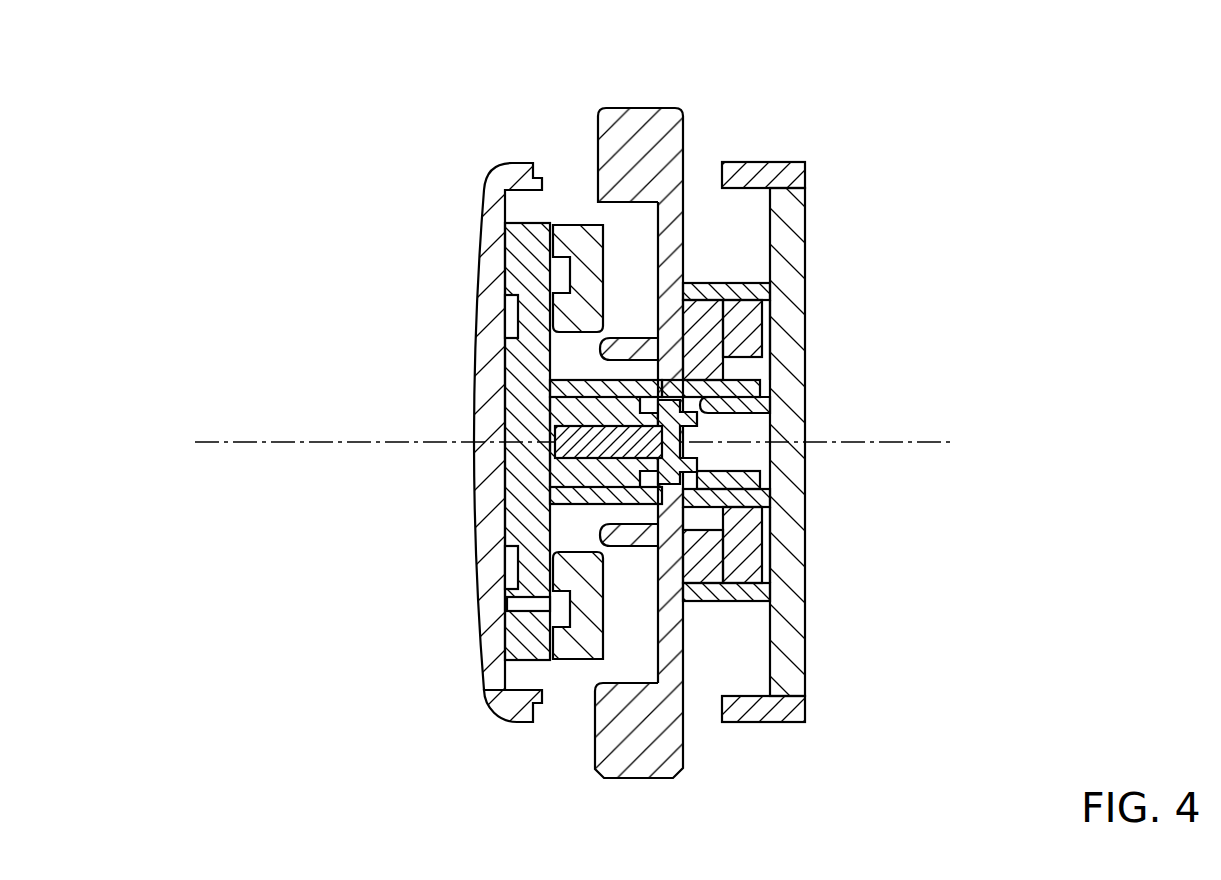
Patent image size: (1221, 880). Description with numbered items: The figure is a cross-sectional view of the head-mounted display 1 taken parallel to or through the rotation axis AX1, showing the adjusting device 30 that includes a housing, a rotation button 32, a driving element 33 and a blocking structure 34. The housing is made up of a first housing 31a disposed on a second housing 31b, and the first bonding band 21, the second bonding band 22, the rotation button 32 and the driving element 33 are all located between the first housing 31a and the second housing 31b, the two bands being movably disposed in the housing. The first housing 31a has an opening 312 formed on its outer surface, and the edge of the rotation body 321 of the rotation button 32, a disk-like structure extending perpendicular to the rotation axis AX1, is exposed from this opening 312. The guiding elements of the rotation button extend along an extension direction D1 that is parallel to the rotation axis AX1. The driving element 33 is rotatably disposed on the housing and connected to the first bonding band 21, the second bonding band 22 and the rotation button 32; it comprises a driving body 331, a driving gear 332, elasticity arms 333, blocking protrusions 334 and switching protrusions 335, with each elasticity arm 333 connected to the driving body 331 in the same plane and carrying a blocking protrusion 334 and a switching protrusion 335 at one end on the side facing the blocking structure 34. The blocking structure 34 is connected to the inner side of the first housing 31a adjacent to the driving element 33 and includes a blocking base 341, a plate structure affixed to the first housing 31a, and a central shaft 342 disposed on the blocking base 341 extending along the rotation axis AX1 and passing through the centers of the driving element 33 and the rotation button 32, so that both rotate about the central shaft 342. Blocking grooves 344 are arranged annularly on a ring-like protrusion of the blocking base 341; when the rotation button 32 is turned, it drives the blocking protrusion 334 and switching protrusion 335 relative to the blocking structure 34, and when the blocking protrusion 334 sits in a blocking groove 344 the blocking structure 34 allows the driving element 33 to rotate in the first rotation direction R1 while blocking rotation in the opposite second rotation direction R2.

The head-mounted display 1 is at (1004, 74).
The first bonding band 21 is at (707, 350).
The second bonding band 22 is at (735, 312).
The adjusting device 30 is at (518, 385).
The first housing 31a is at (510, 172).
The second housing 31b is at (542, 402).
The opening 312 is at (766, 142).
The rotation button 32 is at (660, 432).
The rotation body 321 is at (663, 118).
The driving element 33 is at (645, 466).
The driving body 331 is at (555, 386).
The driving gear 332 is at (708, 495).
The elasticity arm 333 is at (602, 665).
The blocking protrusion 334 is at (517, 722).
The switching protrusion 335 is at (567, 640).
The blocking structure 34 is at (511, 441).
The blocking base 341 is at (587, 470).
The central shaft 342 is at (535, 548).
The blocking groove 344 is at (507, 238).
The rotation axis AX1 is at (409, 445).
The first rotation direction R1 is at (278, 480).
The second rotation direction R2 is at (318, 482).
The extension direction D1 is at (312, 520).